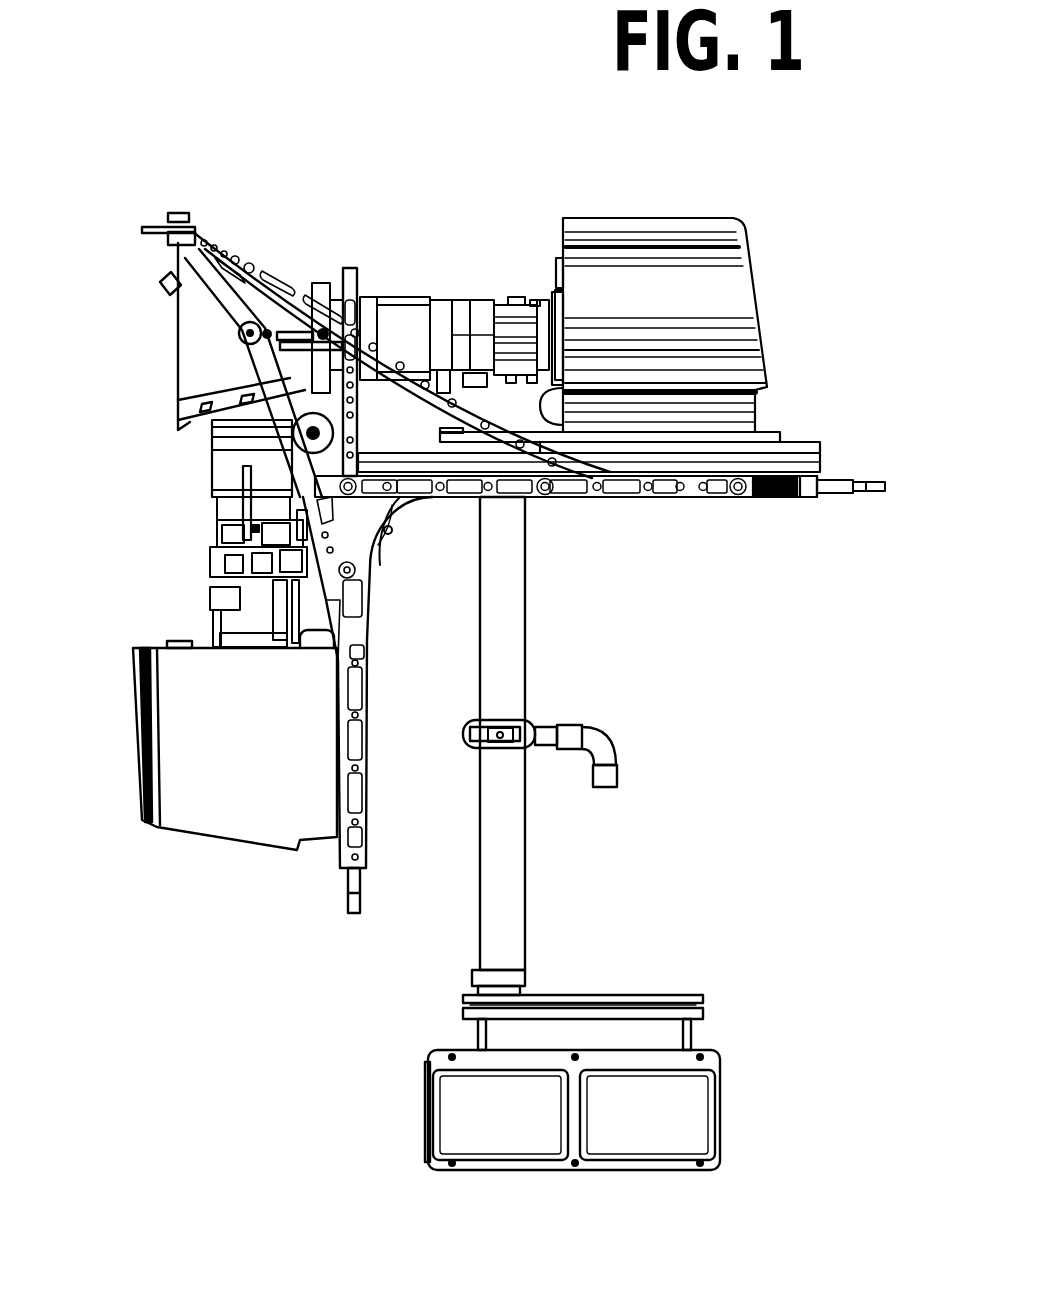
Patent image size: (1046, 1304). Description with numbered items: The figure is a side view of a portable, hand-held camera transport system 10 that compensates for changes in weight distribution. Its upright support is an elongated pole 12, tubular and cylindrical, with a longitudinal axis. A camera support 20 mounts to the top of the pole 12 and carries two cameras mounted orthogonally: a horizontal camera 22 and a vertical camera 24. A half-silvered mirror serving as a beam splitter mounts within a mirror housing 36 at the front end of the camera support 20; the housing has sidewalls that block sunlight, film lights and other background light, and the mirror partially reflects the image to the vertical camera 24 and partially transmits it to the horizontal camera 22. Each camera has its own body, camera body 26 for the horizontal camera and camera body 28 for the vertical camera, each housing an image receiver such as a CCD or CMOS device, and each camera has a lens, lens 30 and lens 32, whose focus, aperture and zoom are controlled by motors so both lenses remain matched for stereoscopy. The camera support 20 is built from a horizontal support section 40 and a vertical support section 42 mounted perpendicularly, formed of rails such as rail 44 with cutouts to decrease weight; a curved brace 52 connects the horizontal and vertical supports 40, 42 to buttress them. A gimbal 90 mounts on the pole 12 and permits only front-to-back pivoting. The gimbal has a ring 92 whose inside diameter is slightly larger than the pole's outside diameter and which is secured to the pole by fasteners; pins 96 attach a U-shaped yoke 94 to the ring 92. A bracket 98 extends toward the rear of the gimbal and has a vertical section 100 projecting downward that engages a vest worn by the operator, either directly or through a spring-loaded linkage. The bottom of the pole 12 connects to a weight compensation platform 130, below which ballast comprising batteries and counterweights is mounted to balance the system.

The hand-held transport system 10 is at (718, 581).
The elongated pole 12 is at (520, 885).
The camera support 20 is at (386, 557).
The horizontal camera 22 is at (692, 200).
The vertical camera 24 is at (146, 606).
The camera body 26 is at (725, 299).
The camera body 28 is at (202, 815).
The lens 30 is at (385, 295).
The lens 32 is at (215, 470).
The mirror housing 36 is at (178, 420).
The horizontal support section 40 is at (555, 498).
The vertical support section 42 is at (340, 858).
The rail 44 is at (758, 506).
The brace 52 is at (385, 536).
The gimbal 90 is at (545, 713).
The ring 92 is at (468, 749).
The yoke 94 is at (535, 741).
The pins 96 is at (470, 722).
The bracket 98 is at (596, 737).
The vertical section 100 is at (620, 778).
The weight compensation platform 130 is at (678, 978).